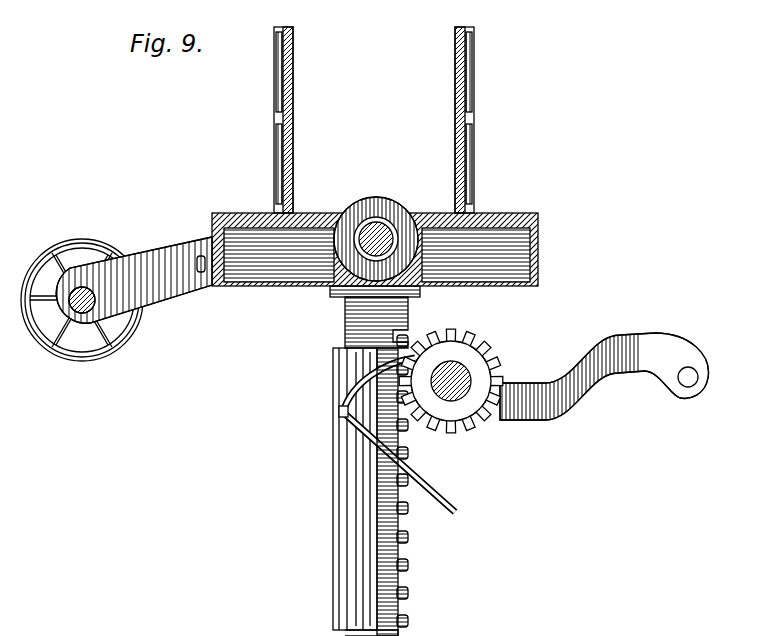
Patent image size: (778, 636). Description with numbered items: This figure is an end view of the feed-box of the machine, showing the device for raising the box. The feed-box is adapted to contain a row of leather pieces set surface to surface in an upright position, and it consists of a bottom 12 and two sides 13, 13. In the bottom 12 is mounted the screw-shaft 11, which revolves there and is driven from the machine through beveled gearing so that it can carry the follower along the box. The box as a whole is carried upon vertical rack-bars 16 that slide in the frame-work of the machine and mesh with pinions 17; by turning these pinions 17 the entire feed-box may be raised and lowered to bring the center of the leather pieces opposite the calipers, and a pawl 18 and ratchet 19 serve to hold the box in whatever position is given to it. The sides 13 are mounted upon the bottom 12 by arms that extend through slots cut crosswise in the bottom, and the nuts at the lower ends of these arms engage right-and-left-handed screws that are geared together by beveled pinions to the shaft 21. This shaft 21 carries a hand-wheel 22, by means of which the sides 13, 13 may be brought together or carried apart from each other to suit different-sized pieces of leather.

The screw-shaft 11 is at (398, 207).
The bottom 12 is at (318, 213).
The sides 13 is at (293, 79).
The rack-bars 16 is at (408, 537).
The pinions 17 is at (482, 420).
The pawl 18 is at (376, 373).
The ratchet 19 is at (488, 358).
The shaft 21 is at (96, 298).
The hand-wheel 22 is at (103, 360).